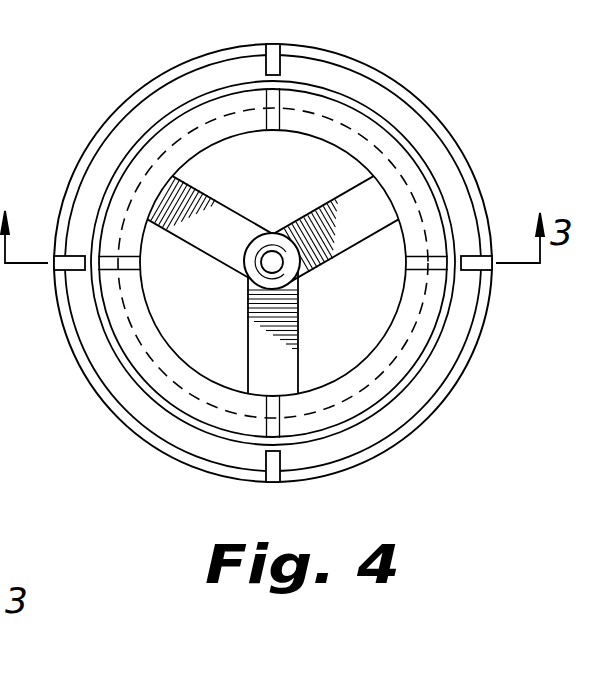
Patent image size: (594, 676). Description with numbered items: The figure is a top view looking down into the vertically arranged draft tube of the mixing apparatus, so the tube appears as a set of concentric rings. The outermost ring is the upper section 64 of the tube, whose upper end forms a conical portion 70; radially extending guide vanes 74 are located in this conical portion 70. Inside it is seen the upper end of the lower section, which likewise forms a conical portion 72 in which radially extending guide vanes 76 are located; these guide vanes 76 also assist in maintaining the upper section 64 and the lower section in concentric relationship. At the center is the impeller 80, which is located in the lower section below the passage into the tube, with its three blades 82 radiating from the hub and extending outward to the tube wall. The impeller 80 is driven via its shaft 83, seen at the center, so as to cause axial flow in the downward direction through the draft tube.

The upper section 64 is at (410, 92).
The conical portion 70 is at (345, 88).
The conical portion 72 is at (440, 355).
The guide vanes 74 is at (264, 114).
The guide vanes 76 is at (285, 62).
The impeller 80 is at (271, 234).
The blades 82 is at (338, 200).
The shaft 83 is at (284, 272).